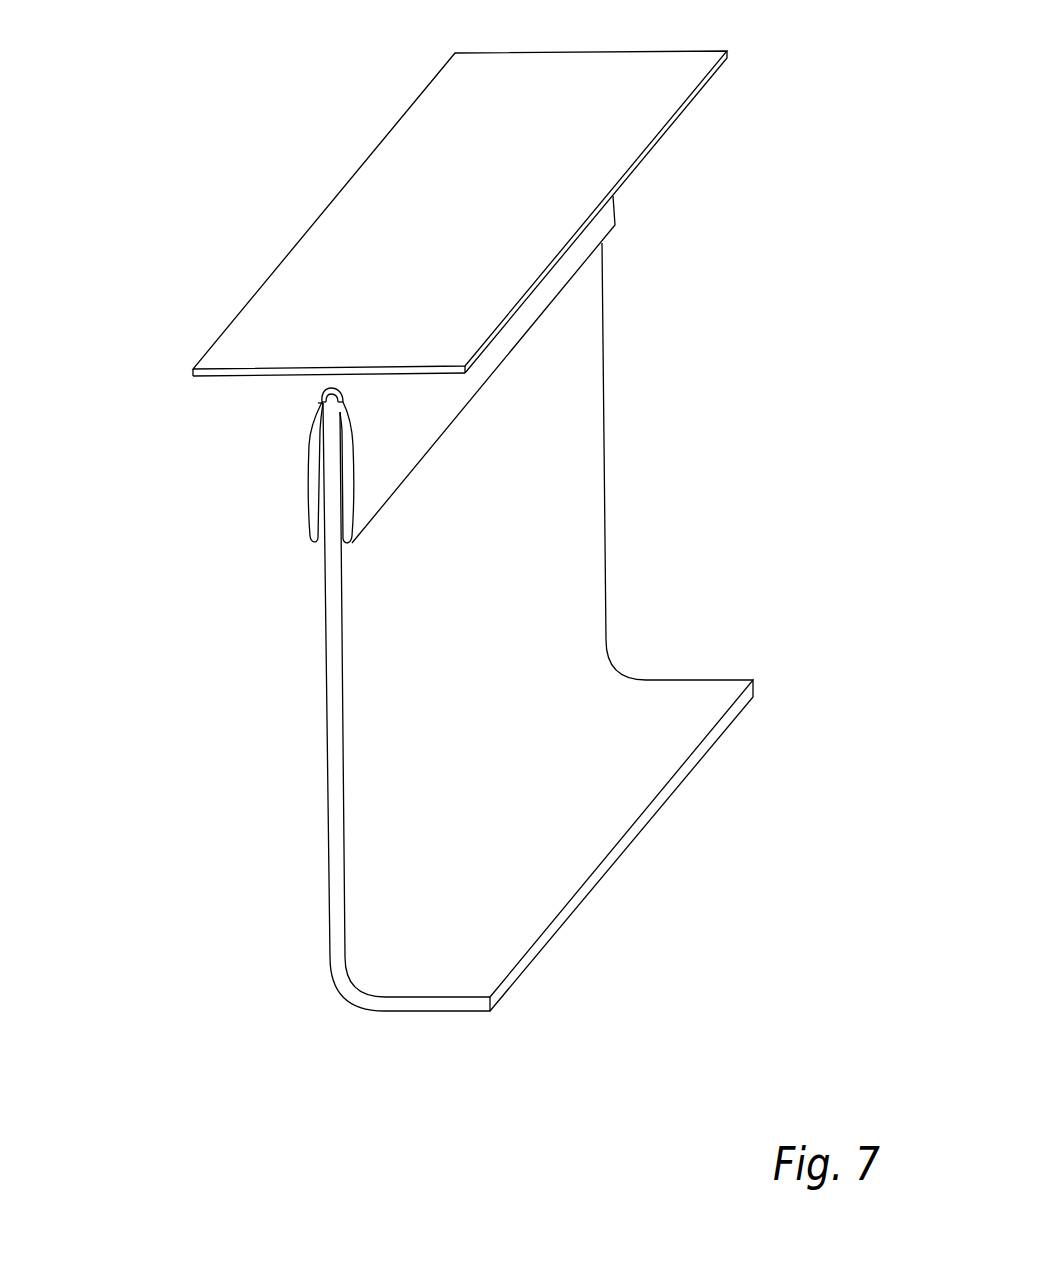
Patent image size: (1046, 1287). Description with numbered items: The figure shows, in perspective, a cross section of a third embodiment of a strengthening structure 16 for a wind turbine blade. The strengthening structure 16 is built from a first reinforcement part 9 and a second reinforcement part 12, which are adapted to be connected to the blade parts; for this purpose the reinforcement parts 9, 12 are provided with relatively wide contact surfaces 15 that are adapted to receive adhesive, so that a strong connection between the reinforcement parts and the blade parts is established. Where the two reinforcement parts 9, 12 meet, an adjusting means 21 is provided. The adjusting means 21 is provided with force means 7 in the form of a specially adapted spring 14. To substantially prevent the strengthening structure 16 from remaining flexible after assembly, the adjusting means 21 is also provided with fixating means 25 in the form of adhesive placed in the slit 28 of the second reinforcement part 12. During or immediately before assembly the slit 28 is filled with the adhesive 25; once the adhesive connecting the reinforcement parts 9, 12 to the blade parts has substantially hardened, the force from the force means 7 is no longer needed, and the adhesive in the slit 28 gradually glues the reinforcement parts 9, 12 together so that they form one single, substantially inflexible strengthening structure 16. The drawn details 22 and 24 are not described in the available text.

The force means 7 is at (327, 392).
The first reinforcement part 9 is at (380, 853).
The second reinforcement part 12 is at (262, 378).
The spring 14 is at (318, 403).
The contact surfaces 15 is at (372, 245).
The strengthening structure 16 is at (180, 227).
The adjusting means 21 is at (250, 508).
The first clip leg 22 is at (318, 483).
The first groove 24 is at (327, 392).
The fixating means 25 is at (343, 410).
The slit 28 is at (348, 413).